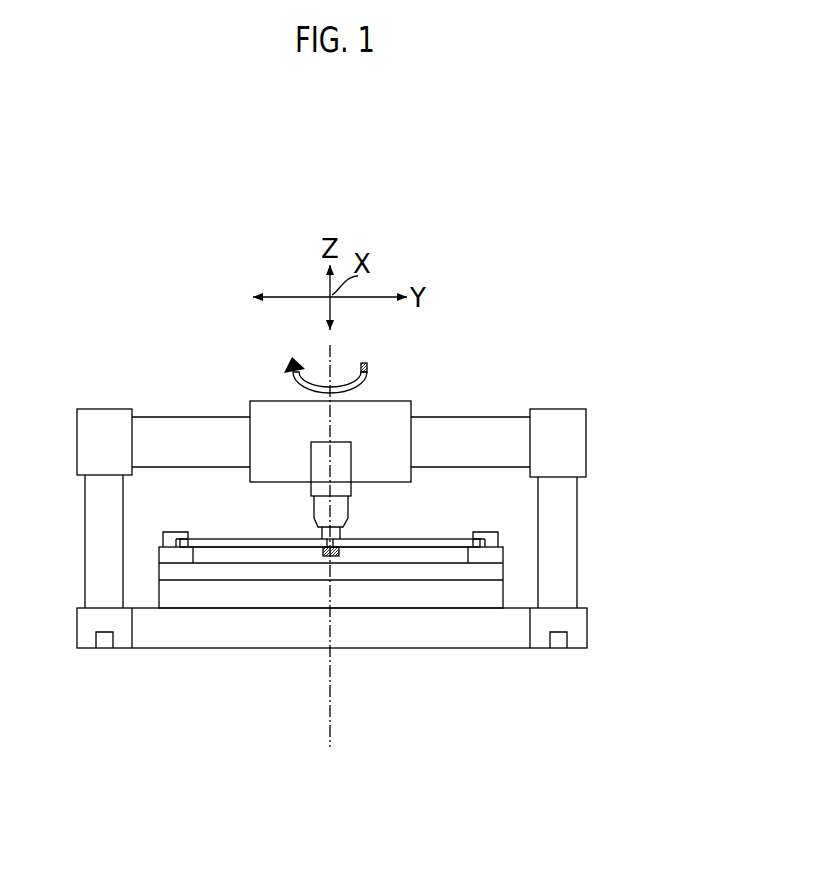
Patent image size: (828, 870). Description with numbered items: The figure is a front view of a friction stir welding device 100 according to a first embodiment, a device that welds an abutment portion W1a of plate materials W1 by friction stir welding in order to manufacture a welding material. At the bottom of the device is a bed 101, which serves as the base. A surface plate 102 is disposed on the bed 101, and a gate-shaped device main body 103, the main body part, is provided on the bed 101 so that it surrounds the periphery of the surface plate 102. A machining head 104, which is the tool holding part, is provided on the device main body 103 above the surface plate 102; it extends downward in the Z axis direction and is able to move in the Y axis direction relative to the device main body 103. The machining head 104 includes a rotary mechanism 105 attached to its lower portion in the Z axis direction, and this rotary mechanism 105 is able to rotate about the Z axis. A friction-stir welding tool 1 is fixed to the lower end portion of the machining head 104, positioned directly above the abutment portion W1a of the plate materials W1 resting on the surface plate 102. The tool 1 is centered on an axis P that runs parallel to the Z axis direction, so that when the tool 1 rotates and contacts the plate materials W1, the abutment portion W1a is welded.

The friction stir welding device 100 is at (583, 358).
The bed 101 is at (416, 630).
The surface plate 102 is at (490, 573).
The device main body 103 is at (575, 442).
The machining head 104 is at (372, 417).
The rotary mechanism 105 is at (342, 467).
The friction-stir welding tool 1 is at (305, 527).
The plate material W1 is at (236, 546).
The abutment portion W1a is at (323, 563).
The axis P is at (333, 722).